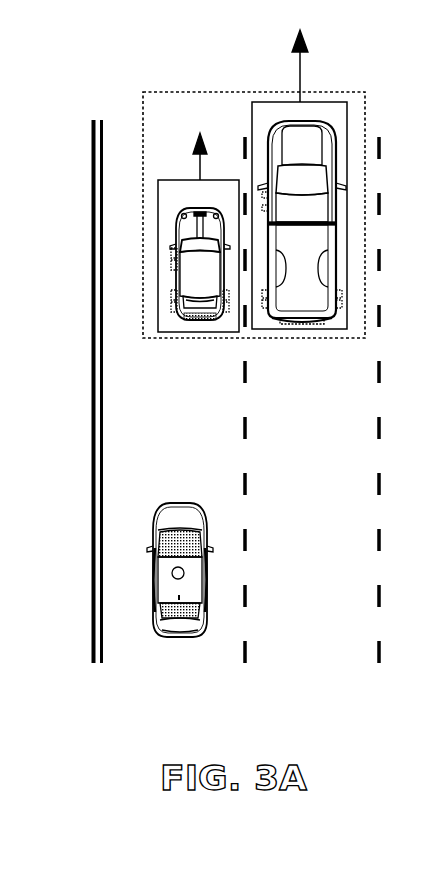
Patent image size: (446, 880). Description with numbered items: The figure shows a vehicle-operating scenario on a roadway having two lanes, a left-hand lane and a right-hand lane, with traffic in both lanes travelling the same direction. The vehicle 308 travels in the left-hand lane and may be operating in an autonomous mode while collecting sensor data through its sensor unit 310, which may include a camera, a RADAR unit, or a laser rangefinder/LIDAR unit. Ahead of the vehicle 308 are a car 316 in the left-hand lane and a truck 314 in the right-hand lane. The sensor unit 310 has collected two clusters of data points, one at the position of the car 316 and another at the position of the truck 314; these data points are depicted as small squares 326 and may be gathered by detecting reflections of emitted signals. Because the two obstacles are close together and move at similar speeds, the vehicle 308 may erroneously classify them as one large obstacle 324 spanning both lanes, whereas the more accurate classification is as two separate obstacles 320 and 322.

The vehicle 308 is at (178, 503).
The sensor unit 310 is at (172, 574).
The truck 314 is at (282, 124).
The car 316 is at (184, 210).
The obstacle 320 is at (207, 332).
The obstacle 322 is at (347, 101).
The large obstacle 324 is at (160, 92).
The small squares 326 is at (328, 320).